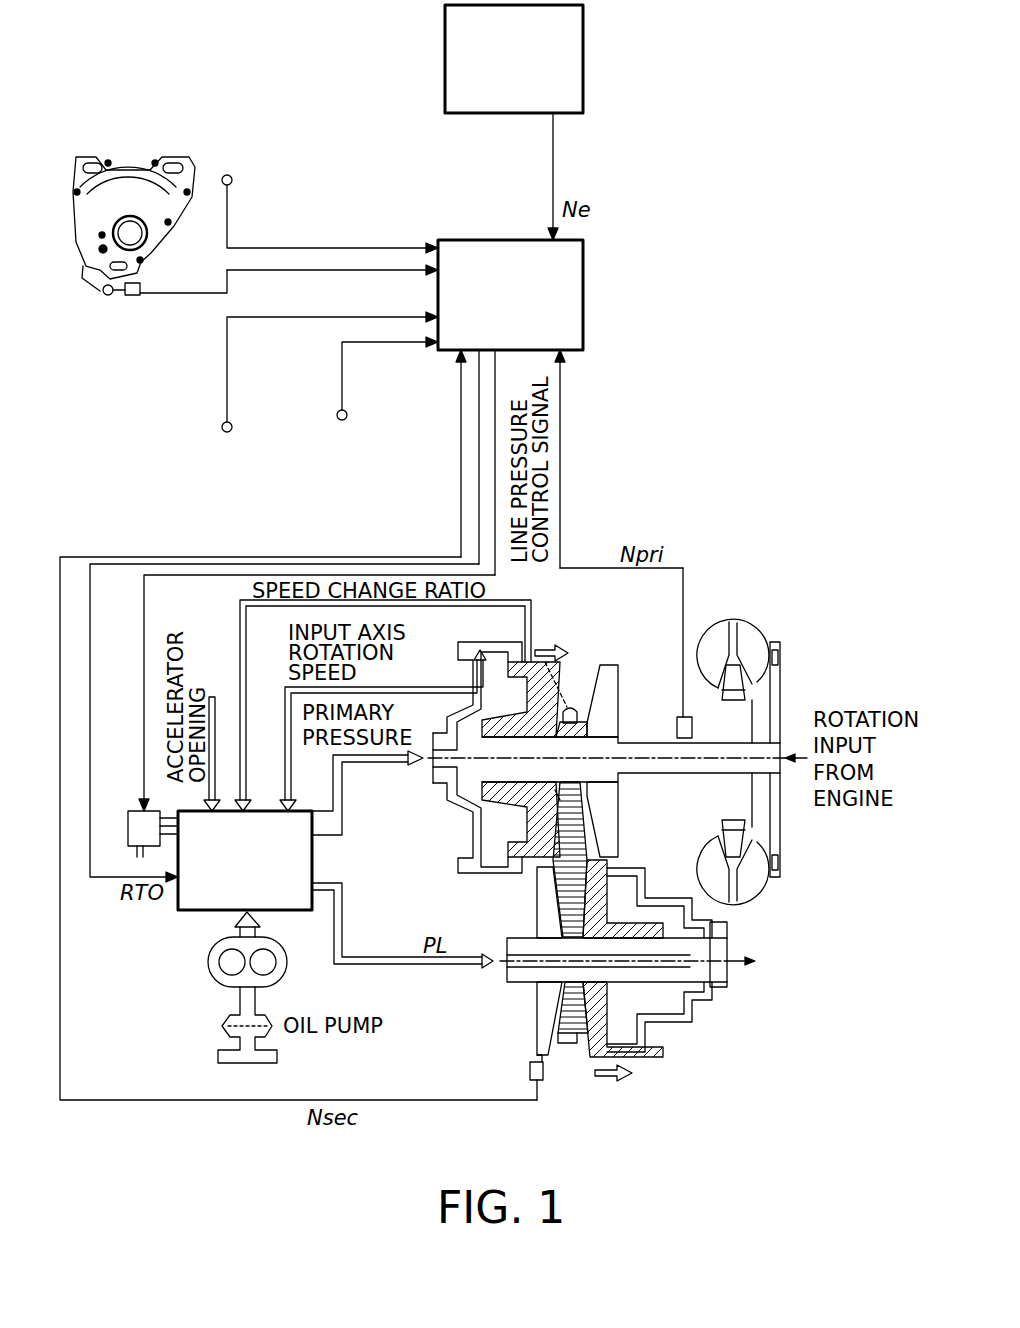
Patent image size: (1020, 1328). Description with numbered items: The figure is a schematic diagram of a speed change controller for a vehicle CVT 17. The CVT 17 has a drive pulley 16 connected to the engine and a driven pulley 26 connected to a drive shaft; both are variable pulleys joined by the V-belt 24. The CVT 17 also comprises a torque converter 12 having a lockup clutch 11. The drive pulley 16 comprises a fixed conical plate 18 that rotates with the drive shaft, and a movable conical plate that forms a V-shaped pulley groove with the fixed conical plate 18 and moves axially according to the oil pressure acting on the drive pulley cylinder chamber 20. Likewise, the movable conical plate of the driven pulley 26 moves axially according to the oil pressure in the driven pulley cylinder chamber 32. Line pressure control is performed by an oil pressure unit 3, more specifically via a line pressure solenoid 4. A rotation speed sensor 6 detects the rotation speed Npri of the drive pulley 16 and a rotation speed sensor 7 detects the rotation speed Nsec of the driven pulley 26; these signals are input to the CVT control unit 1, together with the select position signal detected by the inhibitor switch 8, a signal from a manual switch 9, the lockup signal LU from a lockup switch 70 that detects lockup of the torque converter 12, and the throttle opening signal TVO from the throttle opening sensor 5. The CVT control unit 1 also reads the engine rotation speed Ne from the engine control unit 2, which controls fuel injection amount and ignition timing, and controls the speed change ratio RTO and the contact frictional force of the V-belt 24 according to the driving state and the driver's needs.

The CVT control unit 1 is at (583, 296).
The engine control unit 2 is at (583, 63).
The oil pressure unit 3 is at (313, 863).
The line pressure solenoid 4 is at (128, 833).
The throttle opening sensor 5 is at (222, 424).
The rotation speed sensor 6 is at (684, 716).
The rotation speed sensor 7 is at (543, 1072).
The inhibitor switch 8 is at (80, 158).
The manual switch 9 is at (232, 176).
The lockup clutch 11 is at (780, 833).
The torque converter 12 is at (745, 621).
The drive pulley 16 is at (613, 665).
The vehicle CVT 17 is at (735, 1020).
The fixed conical plate 18 is at (553, 683).
The drive pulley cylinder chamber 20 is at (508, 692).
The V-belt 24 is at (587, 838).
The driven pulley 26 is at (537, 905).
The driven pulley cylinder chamber 32 is at (672, 998).
The lockup switch 70 is at (342, 420).